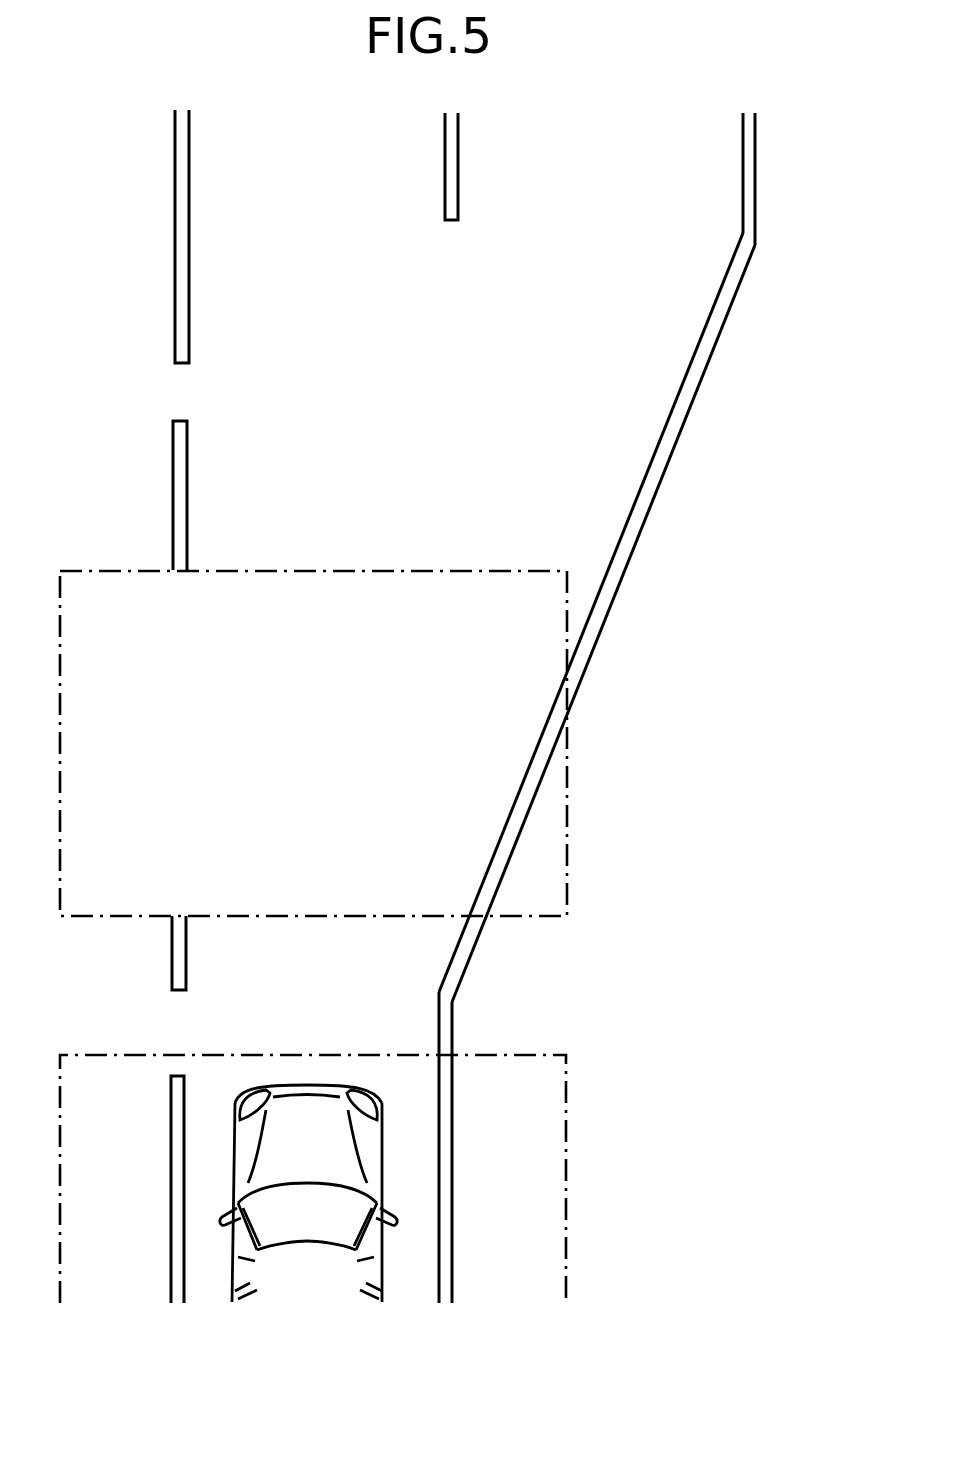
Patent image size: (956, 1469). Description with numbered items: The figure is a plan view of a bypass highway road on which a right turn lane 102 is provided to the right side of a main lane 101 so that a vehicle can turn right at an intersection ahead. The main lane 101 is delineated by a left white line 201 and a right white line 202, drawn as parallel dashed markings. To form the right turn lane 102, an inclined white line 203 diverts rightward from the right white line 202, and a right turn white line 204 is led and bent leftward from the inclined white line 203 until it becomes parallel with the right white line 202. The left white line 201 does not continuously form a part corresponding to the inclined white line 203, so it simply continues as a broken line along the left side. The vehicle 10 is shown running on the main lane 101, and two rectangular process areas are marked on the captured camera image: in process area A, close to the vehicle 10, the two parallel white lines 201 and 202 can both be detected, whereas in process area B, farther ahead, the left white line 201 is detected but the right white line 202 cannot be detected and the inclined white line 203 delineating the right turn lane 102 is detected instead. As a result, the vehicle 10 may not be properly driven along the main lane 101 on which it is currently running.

The vehicle 10 is at (258, 1163).
The main lane 101 is at (330, 1001).
The right turn lane 102 is at (623, 196).
The left white line 201 is at (172, 985).
The right white line 202 is at (458, 133).
The inclined white line 203 is at (664, 478).
The right turn white line 204 is at (755, 200).
The process area A is at (566, 1108).
The process area B is at (567, 813).